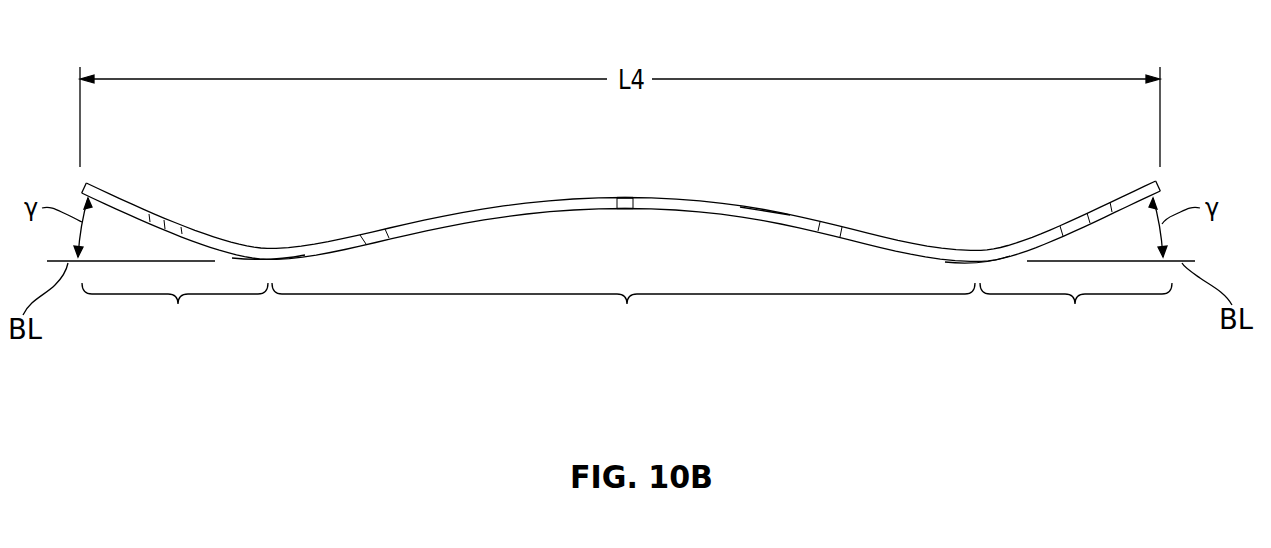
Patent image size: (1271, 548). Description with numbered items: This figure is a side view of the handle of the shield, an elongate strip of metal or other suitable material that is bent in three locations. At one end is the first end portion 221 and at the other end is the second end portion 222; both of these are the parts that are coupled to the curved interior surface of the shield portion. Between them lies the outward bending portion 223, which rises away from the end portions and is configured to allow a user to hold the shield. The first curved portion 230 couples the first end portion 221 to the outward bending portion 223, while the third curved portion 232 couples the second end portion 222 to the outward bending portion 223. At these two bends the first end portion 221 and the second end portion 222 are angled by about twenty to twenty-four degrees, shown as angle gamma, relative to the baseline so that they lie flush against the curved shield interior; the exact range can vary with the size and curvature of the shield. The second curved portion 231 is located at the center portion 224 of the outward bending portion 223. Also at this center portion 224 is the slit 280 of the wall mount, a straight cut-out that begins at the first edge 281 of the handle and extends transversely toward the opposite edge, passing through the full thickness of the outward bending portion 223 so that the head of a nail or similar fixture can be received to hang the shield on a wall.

The first end portion 221 is at (1076, 312).
The second end portion 222 is at (175, 312).
The outward bending portion 223 is at (621, 261).
The center portion 224 is at (627, 195).
The first curved portion 230 is at (977, 250).
The second curved portion 231 is at (623, 212).
The third curved portion 232 is at (268, 249).
The slit 280 is at (633, 192).
The first edge 281 is at (762, 208).